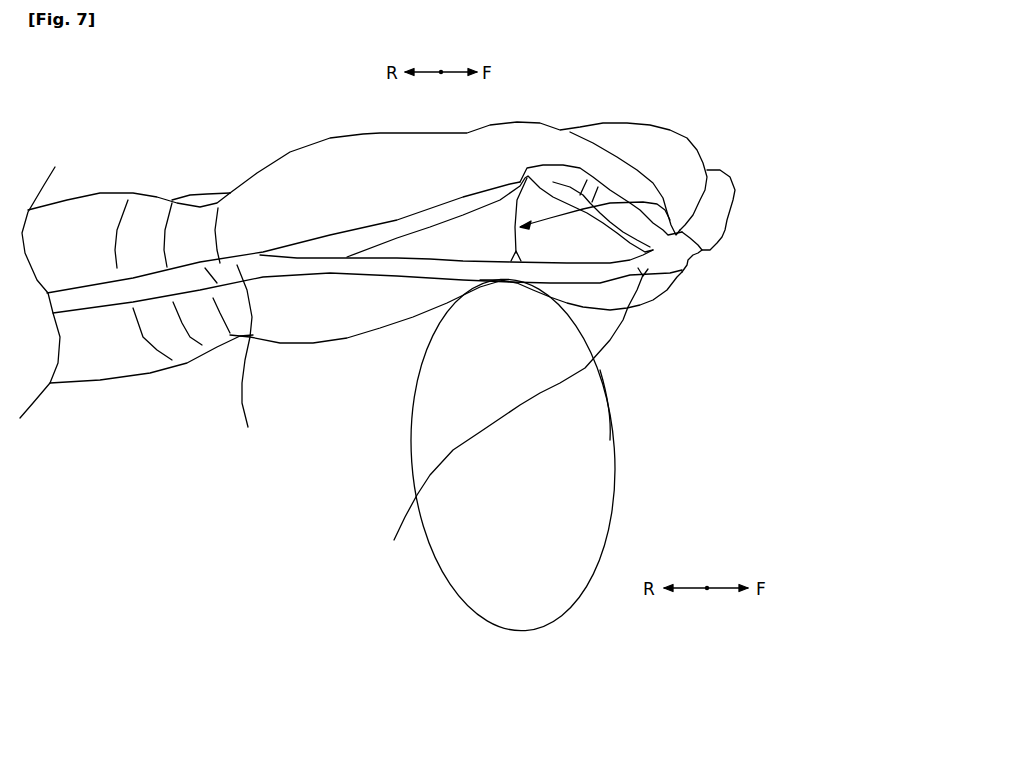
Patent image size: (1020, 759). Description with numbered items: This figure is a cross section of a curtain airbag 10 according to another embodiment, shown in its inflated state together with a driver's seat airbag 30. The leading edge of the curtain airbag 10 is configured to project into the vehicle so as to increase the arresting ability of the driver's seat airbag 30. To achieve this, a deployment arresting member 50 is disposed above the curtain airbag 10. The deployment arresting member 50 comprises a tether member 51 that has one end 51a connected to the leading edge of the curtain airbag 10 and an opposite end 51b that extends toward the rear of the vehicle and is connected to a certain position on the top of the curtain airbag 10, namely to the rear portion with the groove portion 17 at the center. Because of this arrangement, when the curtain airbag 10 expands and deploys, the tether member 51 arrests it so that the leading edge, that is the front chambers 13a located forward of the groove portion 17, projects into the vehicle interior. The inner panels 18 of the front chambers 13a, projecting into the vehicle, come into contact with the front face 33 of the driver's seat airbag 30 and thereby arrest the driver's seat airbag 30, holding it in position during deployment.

The curtain airbag 10 is at (207, 187).
The front chambers 13a is at (657, 157).
The groove portion 17 is at (692, 227).
The inner panels 18 is at (655, 302).
The driver's seat airbag 30 is at (585, 478).
The front face 33 is at (612, 413).
The deployment arresting member 50 is at (368, 255).
The tether member 51 is at (427, 274).
The one end 51a is at (512, 417).
The opposite end 51b is at (258, 360).